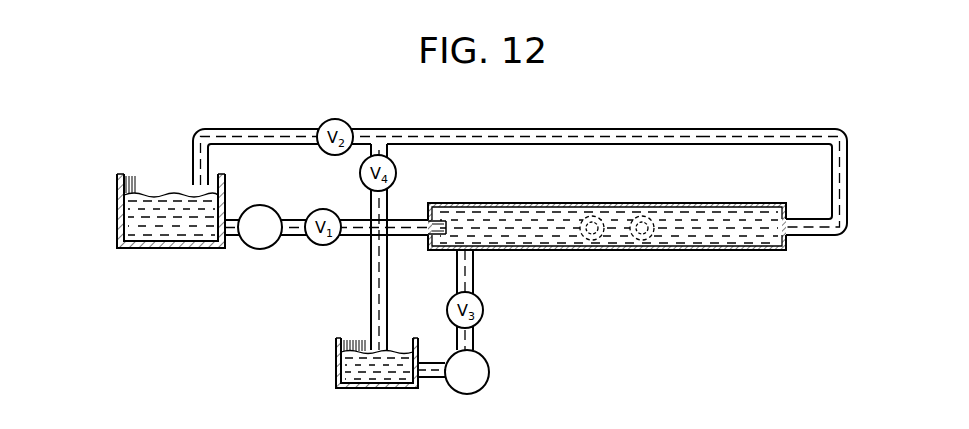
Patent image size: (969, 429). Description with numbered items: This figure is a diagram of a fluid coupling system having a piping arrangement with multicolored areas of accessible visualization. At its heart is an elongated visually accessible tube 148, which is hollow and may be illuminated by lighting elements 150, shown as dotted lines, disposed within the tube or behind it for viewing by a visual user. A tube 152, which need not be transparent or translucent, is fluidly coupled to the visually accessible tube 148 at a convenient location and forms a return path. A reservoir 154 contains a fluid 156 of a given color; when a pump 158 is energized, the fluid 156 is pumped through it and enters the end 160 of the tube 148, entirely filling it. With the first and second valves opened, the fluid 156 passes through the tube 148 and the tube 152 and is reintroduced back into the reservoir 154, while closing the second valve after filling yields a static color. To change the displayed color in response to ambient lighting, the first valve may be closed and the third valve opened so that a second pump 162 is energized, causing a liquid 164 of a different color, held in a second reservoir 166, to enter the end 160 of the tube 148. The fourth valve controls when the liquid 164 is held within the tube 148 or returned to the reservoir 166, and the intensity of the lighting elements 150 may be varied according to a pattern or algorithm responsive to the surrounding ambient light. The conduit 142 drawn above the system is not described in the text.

The conduit 142 is at (462, 127).
The elongated visually accessible tube 148 is at (725, 253).
The lighting elements 150 is at (641, 216).
The tube 152 is at (766, 128).
The reservoir 154 is at (152, 250).
The fluid 156 is at (202, 237).
The pump 158 is at (276, 208).
The end of tube 160 is at (417, 222).
The pump 162 is at (489, 364).
The liquid 164 is at (350, 374).
The reservoir 166 is at (337, 352).